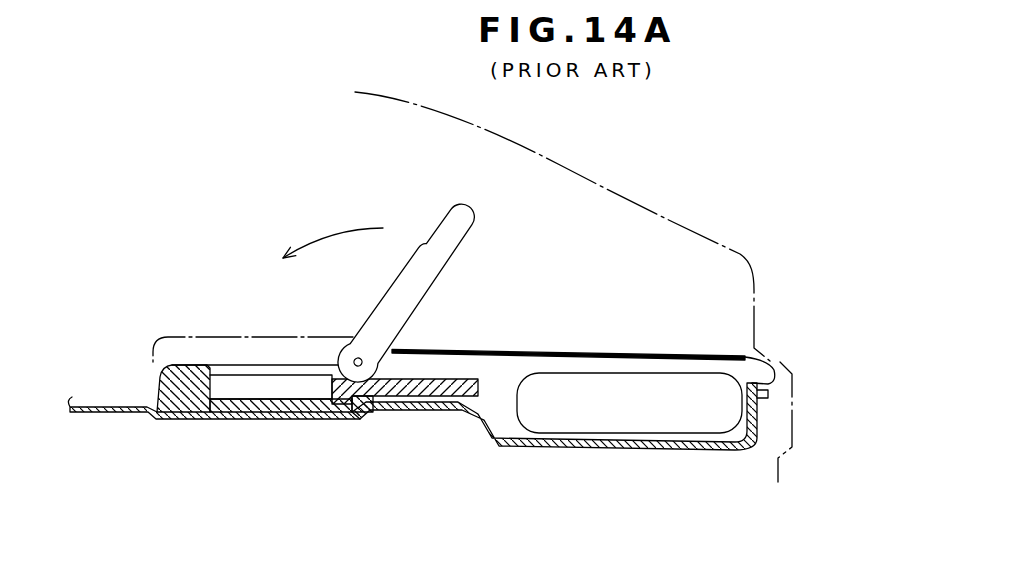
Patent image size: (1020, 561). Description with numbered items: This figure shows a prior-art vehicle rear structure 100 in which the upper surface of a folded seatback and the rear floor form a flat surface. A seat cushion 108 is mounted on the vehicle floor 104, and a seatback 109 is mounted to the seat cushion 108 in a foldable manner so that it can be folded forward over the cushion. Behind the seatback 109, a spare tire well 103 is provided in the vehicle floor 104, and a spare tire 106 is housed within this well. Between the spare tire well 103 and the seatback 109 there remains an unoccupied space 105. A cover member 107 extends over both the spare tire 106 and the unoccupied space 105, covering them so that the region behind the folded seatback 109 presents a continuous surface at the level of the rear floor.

The vehicle rear structure 100 is at (233, 118).
The spare tire well 103 is at (577, 443).
The vehicle floor 104 is at (117, 407).
The unoccupied space 105 is at (444, 367).
The spare tire 106 is at (604, 380).
The cover member 107 is at (521, 356).
The seat cushion 108 is at (176, 364).
The seatback 109 is at (437, 213).